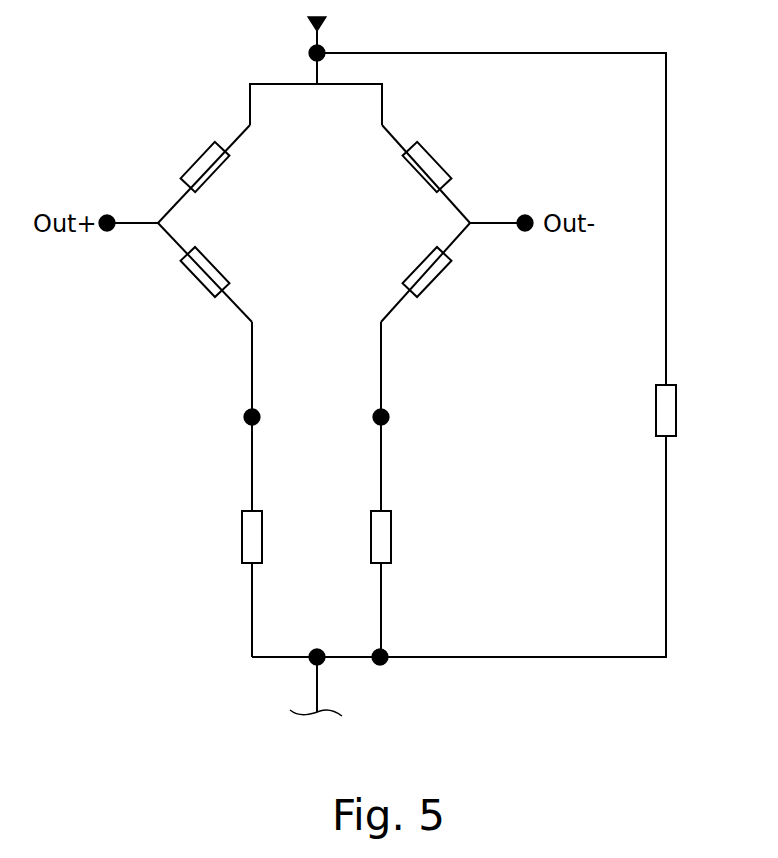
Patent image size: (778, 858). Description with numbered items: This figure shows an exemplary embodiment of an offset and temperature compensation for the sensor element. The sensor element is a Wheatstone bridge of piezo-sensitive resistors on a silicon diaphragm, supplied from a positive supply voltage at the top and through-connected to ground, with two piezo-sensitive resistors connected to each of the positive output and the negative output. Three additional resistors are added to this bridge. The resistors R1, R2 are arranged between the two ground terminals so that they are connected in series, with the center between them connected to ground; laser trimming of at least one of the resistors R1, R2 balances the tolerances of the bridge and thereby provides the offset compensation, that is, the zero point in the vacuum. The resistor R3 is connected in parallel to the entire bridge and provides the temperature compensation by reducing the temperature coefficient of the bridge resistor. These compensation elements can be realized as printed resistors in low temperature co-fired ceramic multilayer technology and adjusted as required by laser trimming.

The resistor R1 is at (233, 537).
The resistor R2 is at (398, 537).
The resistor R3 is at (682, 410).